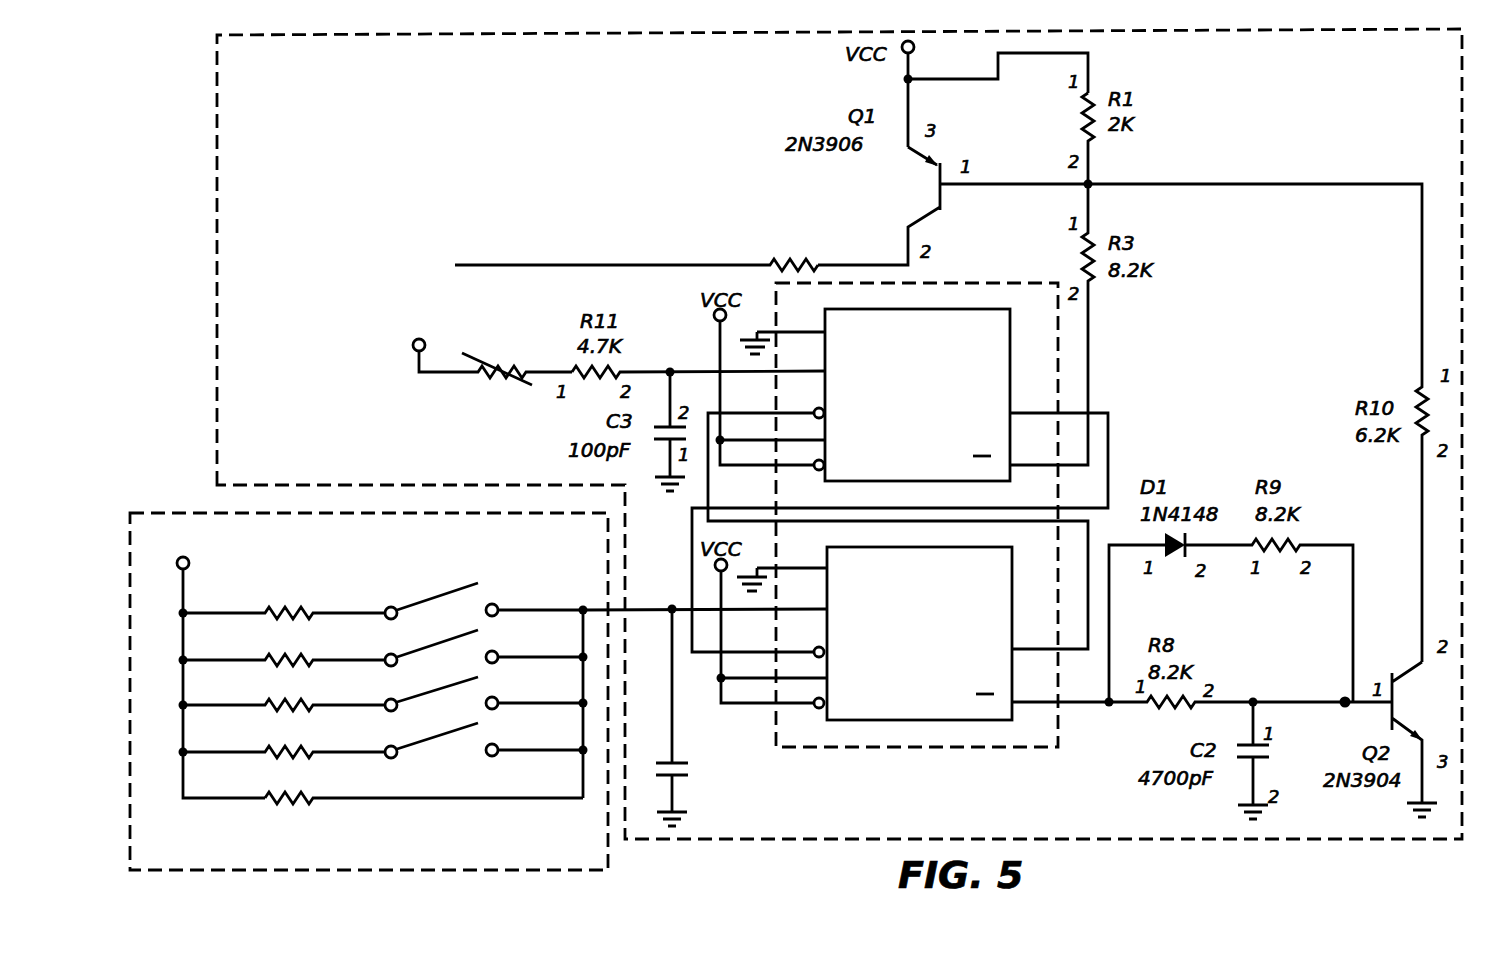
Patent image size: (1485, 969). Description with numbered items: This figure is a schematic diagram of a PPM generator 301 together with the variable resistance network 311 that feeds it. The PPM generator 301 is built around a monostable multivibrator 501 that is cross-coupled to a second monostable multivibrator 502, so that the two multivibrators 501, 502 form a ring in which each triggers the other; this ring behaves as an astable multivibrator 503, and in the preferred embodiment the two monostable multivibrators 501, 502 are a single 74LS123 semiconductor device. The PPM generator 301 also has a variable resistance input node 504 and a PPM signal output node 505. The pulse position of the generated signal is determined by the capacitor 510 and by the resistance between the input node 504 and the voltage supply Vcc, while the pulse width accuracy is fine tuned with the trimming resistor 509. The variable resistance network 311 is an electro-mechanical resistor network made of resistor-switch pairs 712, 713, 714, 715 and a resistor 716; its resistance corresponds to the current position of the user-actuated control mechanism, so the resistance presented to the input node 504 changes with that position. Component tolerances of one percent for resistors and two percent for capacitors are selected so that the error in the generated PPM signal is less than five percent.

The PPM generator 301 is at (214, 104).
The variable resistance network 311 is at (207, 513).
The monostable multivibrator 501 is at (1010, 371).
The second monostable multivibrator 502 is at (980, 720).
The astable multivibrator 503 is at (1060, 342).
The variable resistance input node 504 is at (672, 603).
The PPM signal output node 505 is at (742, 265).
The trimming resistor 509 is at (498, 380).
The capacitor 510 is at (684, 760).
The resistor-switch pair 712 is at (323, 612).
The resistor-switch pair 713 is at (390, 606).
The resistor-switch pair 714 is at (372, 708).
The resistor-switch pair 715 is at (340, 754).
The resistor 716 is at (340, 800).